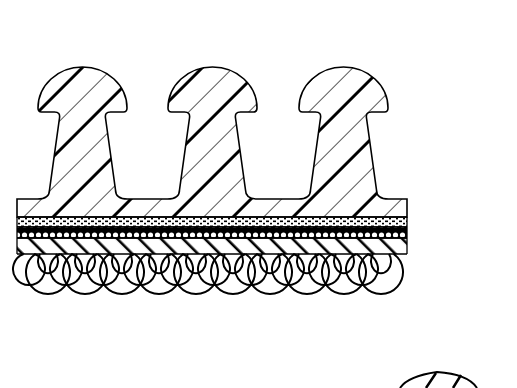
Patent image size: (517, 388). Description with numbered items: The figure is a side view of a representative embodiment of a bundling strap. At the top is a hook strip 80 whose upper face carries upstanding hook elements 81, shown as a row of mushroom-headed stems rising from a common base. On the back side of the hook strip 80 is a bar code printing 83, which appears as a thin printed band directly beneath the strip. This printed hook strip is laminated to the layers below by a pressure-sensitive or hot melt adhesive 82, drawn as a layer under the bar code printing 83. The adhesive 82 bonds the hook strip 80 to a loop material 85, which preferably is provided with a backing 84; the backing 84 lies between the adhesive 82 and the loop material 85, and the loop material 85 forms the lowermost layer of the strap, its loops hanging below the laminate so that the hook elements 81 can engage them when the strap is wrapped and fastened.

The hook strip 80 is at (378, 55).
The hook elements 81 is at (374, 90).
The adhesive 82 is at (407, 233).
The bar code printing 83 is at (407, 223).
The backing 84 is at (407, 247).
The loop material 85 is at (390, 292).